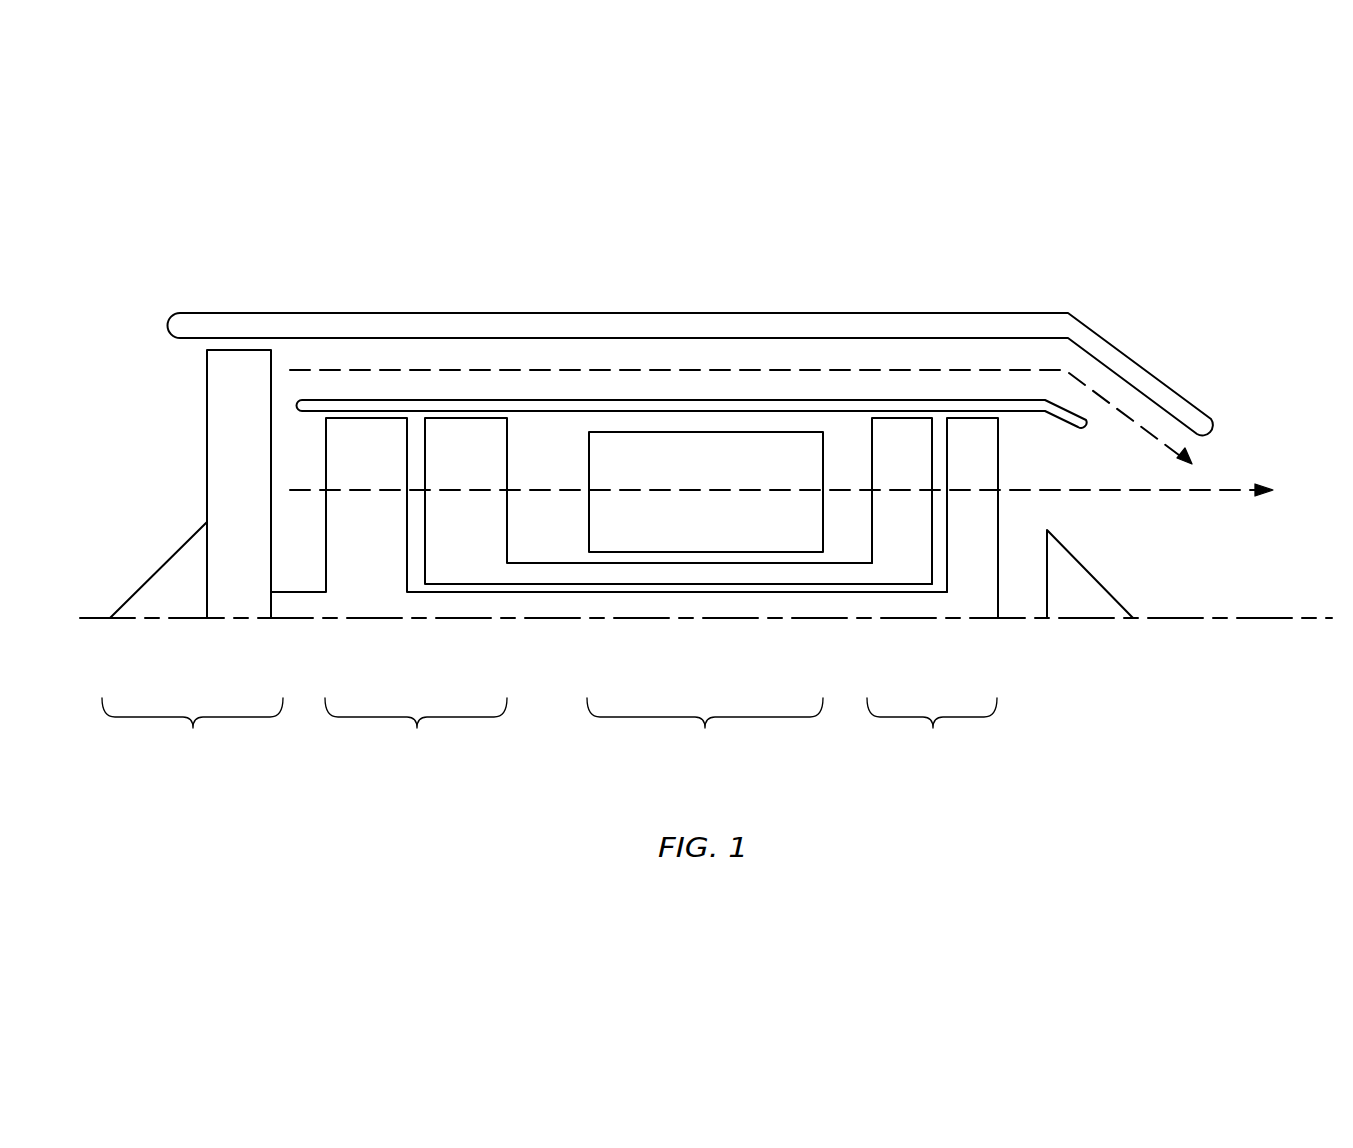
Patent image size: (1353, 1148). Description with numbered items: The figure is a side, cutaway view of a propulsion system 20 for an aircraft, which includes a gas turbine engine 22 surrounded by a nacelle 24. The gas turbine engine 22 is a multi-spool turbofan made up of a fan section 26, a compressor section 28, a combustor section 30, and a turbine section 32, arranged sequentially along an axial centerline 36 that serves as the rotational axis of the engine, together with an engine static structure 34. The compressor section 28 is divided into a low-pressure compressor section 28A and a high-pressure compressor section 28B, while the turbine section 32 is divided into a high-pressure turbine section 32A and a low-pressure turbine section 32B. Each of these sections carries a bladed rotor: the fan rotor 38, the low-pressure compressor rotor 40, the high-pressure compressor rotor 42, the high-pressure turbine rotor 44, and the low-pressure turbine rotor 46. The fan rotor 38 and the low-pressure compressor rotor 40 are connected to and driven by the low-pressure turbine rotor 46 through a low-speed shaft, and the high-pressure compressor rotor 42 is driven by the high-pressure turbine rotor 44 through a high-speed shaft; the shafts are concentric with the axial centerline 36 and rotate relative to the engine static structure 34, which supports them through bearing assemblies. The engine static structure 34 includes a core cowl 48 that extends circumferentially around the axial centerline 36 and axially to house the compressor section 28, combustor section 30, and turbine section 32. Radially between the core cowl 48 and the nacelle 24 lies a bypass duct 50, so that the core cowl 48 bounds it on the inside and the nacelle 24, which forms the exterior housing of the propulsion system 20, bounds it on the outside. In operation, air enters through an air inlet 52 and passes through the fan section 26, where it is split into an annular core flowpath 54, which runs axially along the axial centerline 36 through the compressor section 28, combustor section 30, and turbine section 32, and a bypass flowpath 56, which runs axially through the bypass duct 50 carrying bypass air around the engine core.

The propulsion system 20 is at (1093, 217).
The gas turbine engine 22 is at (1003, 388).
The nacelle 24 is at (861, 327).
The fan section 26 is at (192, 642).
The compressor section 28 is at (416, 730).
The low-pressure compressor section 28A is at (320, 532).
The high-pressure compressor section 28B is at (512, 520).
The combustor section 30 is at (705, 597).
The turbine section 32 is at (1000, 646).
The high-pressure turbine section 32A is at (868, 533).
The low-pressure turbine section 32B is at (1005, 531).
The engine static structure 34 is at (935, 393).
The axial centerline 36 is at (1318, 621).
The fan rotor 38 is at (252, 470).
The low-pressure compressor rotor 40 is at (380, 470).
The high-pressure compressor rotor 42 is at (478, 470).
The high-pressure turbine rotor 44 is at (915, 470).
The low-pressure turbine rotor 46 is at (985, 470).
The core cowl 48 is at (800, 403).
The bypass duct 50 is at (631, 353).
The air inlet 52 is at (165, 372).
The core flowpath 54 is at (1154, 490).
The bypass flowpath 56 is at (481, 368).